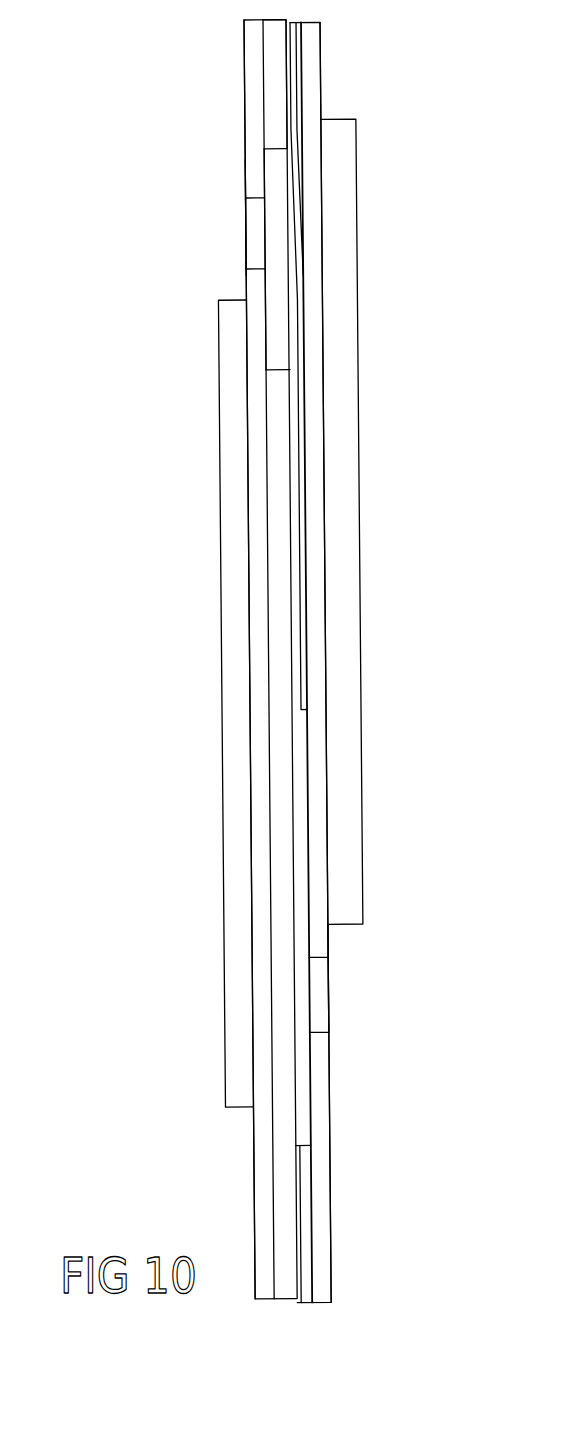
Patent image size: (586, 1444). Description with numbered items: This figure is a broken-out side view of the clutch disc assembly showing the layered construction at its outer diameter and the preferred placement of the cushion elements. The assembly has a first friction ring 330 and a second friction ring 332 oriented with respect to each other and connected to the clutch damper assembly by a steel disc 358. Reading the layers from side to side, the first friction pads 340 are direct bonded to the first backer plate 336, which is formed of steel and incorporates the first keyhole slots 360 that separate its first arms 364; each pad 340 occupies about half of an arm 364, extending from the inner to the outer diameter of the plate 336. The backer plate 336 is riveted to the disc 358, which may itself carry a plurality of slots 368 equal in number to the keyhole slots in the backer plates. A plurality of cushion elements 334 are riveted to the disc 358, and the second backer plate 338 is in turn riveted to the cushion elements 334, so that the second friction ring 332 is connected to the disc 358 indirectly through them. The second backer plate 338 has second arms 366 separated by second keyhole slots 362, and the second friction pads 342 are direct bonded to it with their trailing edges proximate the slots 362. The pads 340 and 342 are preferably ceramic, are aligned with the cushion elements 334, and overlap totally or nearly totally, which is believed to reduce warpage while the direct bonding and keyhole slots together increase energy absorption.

The first friction ring 330 is at (220, 60).
The second friction ring 332 is at (343, 55).
The cushion elements 334 is at (293, 22).
The first backer plate 336 is at (243, 128).
The second backer plate 338 is at (322, 98).
The first friction pads 340 is at (217, 365).
The second friction pads 342 is at (360, 676).
The steel disc 358 is at (278, 18).
The first keyhole slots 360 is at (249, 203).
The second keyhole slots 362 is at (318, 1033).
The first arms 364 is at (243, 162).
The second arms 366 is at (330, 941).
The slots 368 is at (278, 366).